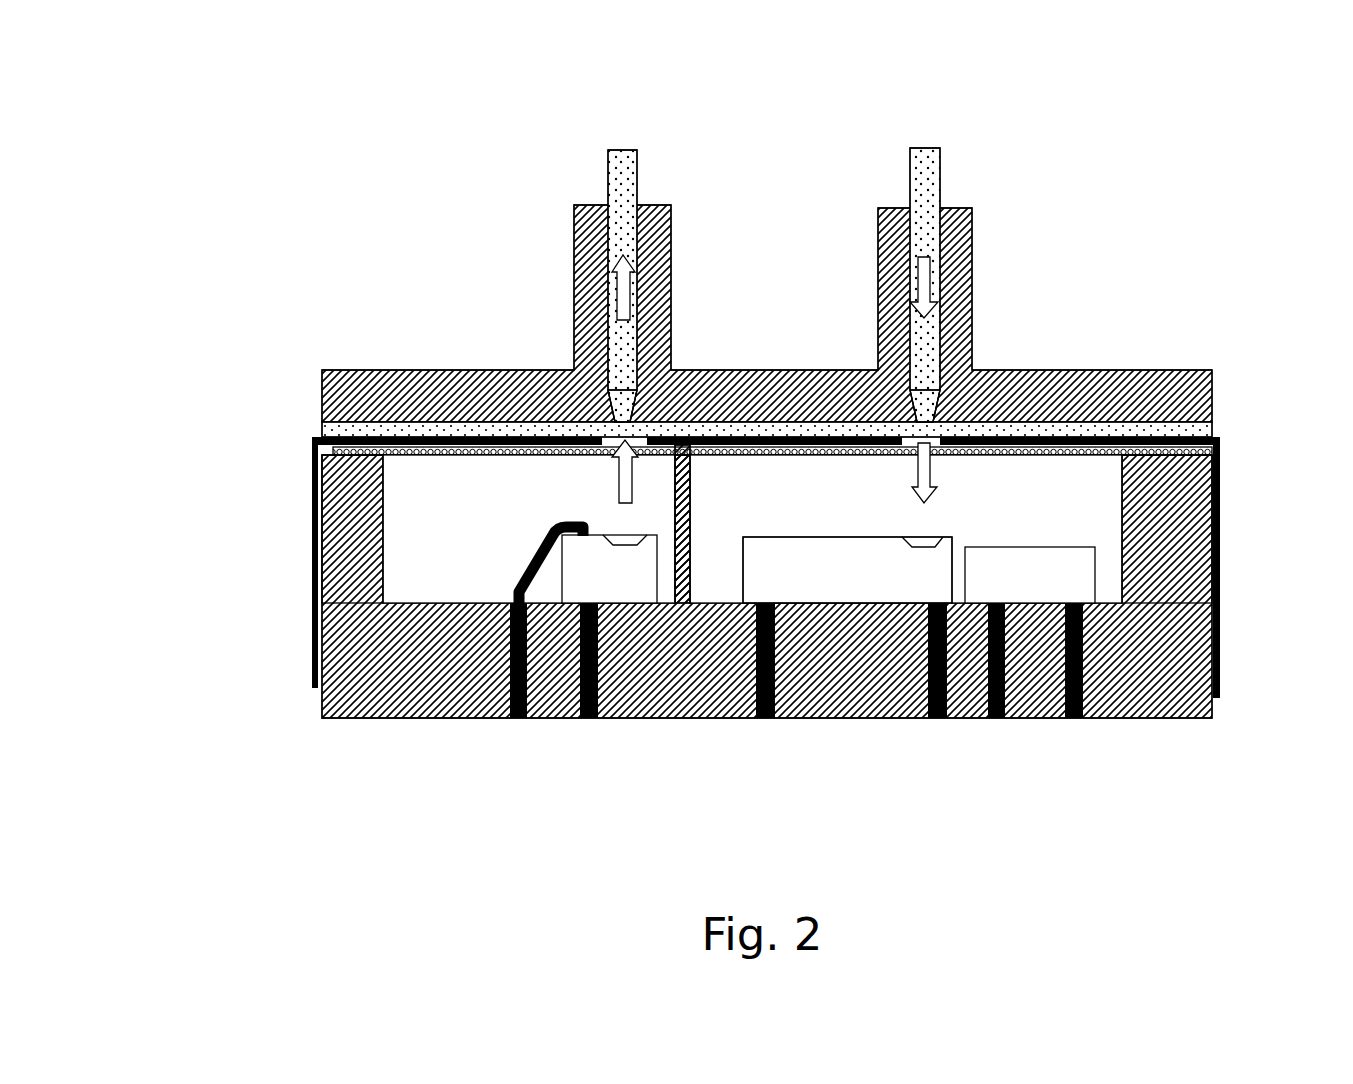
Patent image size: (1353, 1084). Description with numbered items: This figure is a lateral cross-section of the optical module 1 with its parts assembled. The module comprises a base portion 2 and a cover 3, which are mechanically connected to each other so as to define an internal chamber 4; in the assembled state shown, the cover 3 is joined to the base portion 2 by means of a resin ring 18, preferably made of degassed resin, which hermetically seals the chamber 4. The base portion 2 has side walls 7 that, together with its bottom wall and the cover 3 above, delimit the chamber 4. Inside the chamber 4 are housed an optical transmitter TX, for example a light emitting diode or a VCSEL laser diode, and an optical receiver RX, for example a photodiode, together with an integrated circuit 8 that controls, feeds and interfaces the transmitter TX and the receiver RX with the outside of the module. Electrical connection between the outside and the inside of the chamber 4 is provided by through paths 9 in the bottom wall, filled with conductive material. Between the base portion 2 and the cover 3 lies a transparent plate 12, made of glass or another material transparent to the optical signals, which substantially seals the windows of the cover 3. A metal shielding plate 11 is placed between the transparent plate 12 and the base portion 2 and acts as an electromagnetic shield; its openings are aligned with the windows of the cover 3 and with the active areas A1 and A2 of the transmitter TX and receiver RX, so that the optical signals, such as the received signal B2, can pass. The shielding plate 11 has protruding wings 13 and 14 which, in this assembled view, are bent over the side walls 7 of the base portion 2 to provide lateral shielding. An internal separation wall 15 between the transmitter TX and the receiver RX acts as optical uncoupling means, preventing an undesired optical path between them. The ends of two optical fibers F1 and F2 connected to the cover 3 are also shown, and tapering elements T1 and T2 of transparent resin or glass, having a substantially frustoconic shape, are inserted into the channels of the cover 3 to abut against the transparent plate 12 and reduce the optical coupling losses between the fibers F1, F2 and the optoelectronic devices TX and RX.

The optical module 1 is at (698, 436).
The base portion 2 is at (744, 620).
The cover portion 3 is at (701, 272).
The chamber 4 is at (393, 542).
The side walls 7 is at (372, 563).
The integrated circuit 8 is at (1050, 597).
The through paths 9 is at (590, 720).
The shielding plate 11 is at (312, 442).
The transparent plate 12 is at (335, 428).
The protruding wing 13 is at (310, 612).
The protruding wing 14 is at (1220, 593).
The internal separation wall 15 is at (690, 483).
The resin ring 18 is at (1090, 455).
The optical fiber F1 is at (630, 175).
The optical fiber F2 is at (932, 170).
The tapering element T1 is at (640, 388).
The tapering element T2 is at (937, 393).
The optical transmitter TX is at (570, 567).
The optical receiver RX is at (793, 560).
The active area A1 is at (637, 545).
The active area A2 is at (927, 543).
The optical signal B2 is at (930, 470).